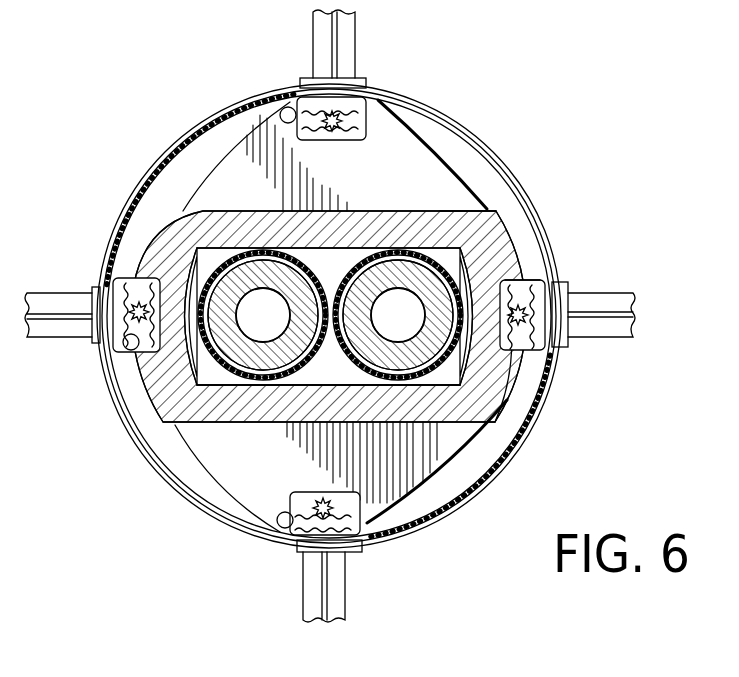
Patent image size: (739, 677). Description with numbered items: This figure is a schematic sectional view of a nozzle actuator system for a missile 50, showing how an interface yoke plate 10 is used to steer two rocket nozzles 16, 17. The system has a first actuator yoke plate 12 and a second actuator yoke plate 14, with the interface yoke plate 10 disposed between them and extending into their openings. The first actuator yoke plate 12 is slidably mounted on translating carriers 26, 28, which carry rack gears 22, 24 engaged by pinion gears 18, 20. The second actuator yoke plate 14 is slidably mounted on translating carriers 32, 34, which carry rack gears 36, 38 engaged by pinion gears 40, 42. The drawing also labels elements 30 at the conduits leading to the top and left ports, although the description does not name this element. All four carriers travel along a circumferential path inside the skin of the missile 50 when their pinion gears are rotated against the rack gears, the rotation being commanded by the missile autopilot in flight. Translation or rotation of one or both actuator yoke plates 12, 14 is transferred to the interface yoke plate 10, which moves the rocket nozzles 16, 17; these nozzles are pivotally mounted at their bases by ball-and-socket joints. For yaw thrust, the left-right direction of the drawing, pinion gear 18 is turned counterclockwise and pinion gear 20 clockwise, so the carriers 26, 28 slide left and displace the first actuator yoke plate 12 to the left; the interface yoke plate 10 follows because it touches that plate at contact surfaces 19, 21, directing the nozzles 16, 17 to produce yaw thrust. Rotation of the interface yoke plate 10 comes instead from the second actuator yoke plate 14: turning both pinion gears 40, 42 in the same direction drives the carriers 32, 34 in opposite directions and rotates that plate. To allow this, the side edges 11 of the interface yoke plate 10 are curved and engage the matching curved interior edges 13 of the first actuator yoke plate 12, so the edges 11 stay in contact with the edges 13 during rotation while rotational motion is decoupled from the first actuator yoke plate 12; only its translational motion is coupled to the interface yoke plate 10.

The interface yoke plate 10 is at (343, 380).
The side edges 11 is at (456, 262).
The first actuator yoke plate 12 is at (418, 126).
The curved interior edges 13 is at (480, 216).
The second actuator yoke plate 14 is at (520, 433).
The rocket nozzle 16 is at (265, 250).
The rocket nozzle 17 is at (397, 250).
The pinion gear 18 is at (362, 125).
The contact surface 19 is at (506, 411).
The pinion gear 20 is at (360, 505).
The contact surface 21 is at (240, 390).
The rack gear 22 is at (290, 107).
The rack gear 24 is at (278, 528).
The translating carrier 26 is at (350, 105).
The translating carrier 28 is at (352, 538).
The conduit 30 is at (313, 42).
The translating carrier 32 is at (122, 338).
The translating carrier 34 is at (540, 340).
The rack gear 36 is at (118, 355).
The rack gear 38 is at (559, 280).
The pinion gear 40 is at (183, 301).
The pinion gear 42 is at (517, 278).
The missile 50 is at (472, 120).